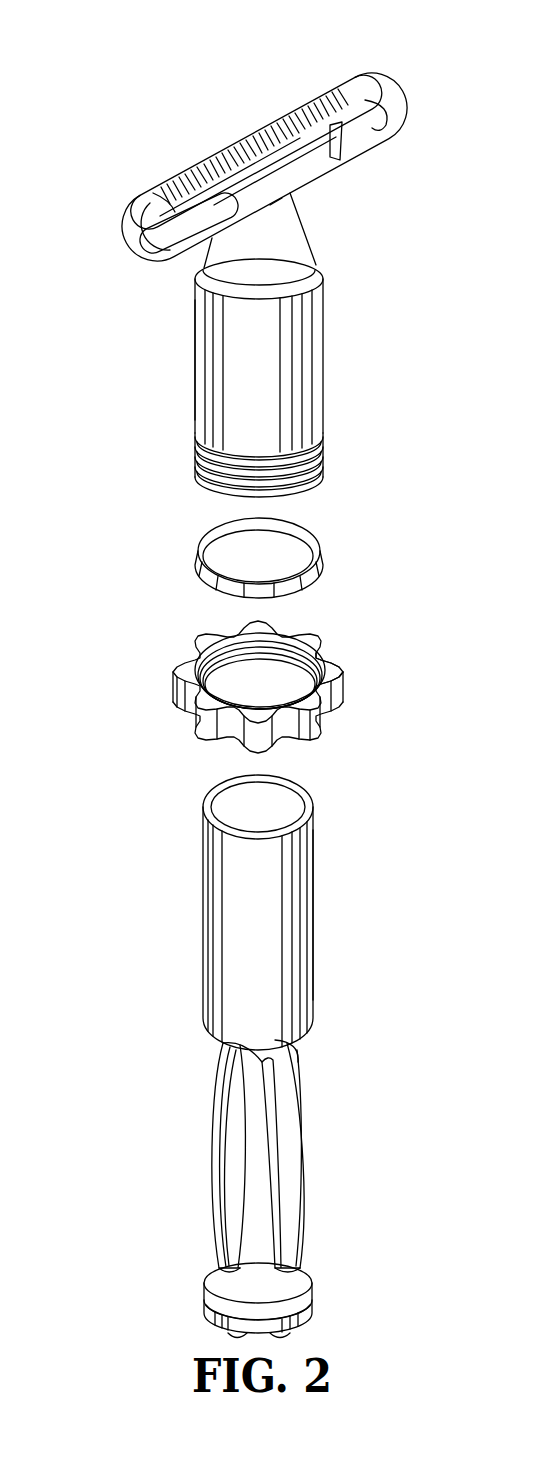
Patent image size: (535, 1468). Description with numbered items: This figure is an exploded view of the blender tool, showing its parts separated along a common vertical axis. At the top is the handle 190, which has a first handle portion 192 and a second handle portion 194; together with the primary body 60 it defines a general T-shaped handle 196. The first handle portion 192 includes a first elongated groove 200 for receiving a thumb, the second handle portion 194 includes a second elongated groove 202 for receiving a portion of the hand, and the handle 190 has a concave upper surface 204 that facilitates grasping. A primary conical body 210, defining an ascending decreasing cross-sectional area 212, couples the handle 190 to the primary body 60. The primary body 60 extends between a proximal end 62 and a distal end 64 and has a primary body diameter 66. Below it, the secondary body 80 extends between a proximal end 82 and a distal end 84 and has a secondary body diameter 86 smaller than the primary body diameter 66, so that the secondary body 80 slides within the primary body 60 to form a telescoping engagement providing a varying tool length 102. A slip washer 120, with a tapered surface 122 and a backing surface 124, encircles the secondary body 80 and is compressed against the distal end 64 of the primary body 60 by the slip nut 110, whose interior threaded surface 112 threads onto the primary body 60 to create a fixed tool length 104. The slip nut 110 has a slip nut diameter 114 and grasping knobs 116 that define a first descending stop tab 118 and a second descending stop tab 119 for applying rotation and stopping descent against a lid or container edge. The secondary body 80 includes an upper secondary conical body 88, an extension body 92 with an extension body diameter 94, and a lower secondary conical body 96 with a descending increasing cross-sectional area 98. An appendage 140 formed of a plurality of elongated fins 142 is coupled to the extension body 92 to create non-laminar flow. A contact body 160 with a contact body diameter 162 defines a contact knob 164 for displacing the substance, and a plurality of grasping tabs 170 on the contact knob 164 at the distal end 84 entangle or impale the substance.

The primary body 60 is at (195, 381).
The proximal end 62 is at (326, 262).
The distal end 64 is at (322, 470).
The primary body diameter 66 is at (195, 345).
The secondary body 80 is at (310, 937).
The proximal end 82 is at (313, 806).
The distal end 84 is at (208, 1323).
The secondary body diameter 86 is at (313, 970).
The upper secondary conical body 88 is at (300, 1057).
The extension body 92 is at (255, 1085).
The extension body diameter 94 is at (265, 1185).
The lower secondary conical body 96 is at (300, 1265).
The descending increasing cross-sectional area 98 is at (215, 1268).
The varying tool length 102 is at (312, 900).
The fixed tool length 104 is at (326, 300).
The slip nut 110 is at (338, 680).
The interior threaded surface 112 is at (225, 655).
The slip nut diameter 114 is at (335, 655).
The grasping knobs 116 is at (315, 728).
The first descending stop tab 118 is at (325, 635).
The second descending stop tab 119 is at (183, 735).
The slip washer 120 is at (322, 553).
The tapered surface 122 is at (205, 548).
The backing surface 124 is at (208, 580).
The appendage 140 is at (307, 1150).
The elongated fins 142 is at (215, 1147).
The contact body 160 is at (315, 1284).
The contact body diameter 162 is at (318, 1300).
The contact knob 164 is at (205, 1298).
The grasping tabs 170 is at (282, 1336).
The handle 190 is at (215, 167).
The first handle portion 192 is at (380, 72).
The second handle portion 194 is at (124, 215).
The T-shaped handle 196 is at (175, 178).
The first elongated groove 200 is at (392, 118).
The second elongated groove 202 is at (177, 258).
The concave upper surface 204 is at (252, 150).
The primary conical body 210 is at (300, 195).
The ascending decreasing cross-sectional area 212 is at (302, 228).